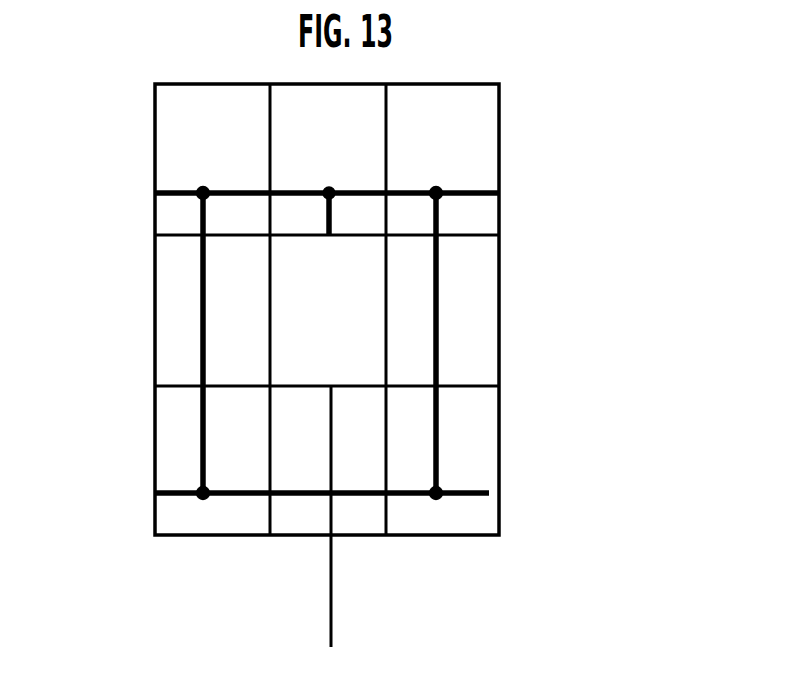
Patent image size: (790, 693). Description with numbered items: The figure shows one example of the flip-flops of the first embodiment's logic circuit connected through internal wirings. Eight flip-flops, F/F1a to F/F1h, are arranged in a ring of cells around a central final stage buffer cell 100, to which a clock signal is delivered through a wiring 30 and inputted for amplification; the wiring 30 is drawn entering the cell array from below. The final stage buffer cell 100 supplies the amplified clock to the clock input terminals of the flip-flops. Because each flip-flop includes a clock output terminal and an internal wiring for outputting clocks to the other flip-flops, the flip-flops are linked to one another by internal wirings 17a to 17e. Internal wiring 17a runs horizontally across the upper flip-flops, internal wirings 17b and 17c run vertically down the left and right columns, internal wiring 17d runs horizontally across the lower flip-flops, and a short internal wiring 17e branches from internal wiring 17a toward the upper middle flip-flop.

The final stage buffer cell 100 is at (358, 362).
The internal wiring 17a is at (475, 194).
The internal wiring 17b is at (203, 270).
The internal wiring 17c is at (437, 412).
The internal wiring 17d is at (475, 494).
The internal wiring 17e is at (328, 213).
The wiring 30 is at (331, 605).